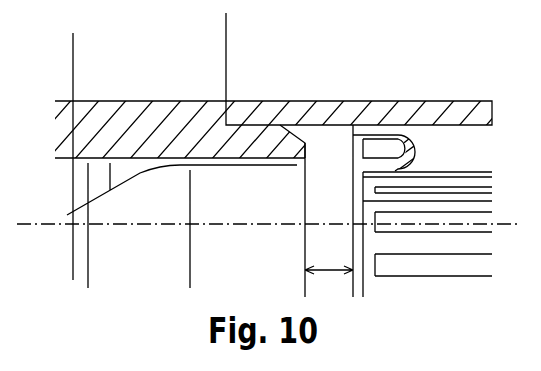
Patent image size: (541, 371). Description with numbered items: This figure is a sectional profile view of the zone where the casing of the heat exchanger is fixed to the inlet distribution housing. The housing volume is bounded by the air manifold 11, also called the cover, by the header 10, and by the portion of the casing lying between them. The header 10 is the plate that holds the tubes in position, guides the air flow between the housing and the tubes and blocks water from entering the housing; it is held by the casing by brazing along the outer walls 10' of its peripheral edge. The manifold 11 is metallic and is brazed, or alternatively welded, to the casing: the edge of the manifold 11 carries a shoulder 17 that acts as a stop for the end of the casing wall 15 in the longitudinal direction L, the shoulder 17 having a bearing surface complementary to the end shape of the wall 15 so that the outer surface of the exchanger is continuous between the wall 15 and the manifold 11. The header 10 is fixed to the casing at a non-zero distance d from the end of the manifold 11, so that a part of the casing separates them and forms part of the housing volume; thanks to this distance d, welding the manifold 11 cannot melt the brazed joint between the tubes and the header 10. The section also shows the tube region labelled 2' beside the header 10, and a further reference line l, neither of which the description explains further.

The manifold 11 is at (162, 108).
The wall of the casing 15 is at (290, 108).
The shoulder 17 is at (252, 125).
The outer walls of the peripheral edge of the header 10' is at (386, 106).
The header plate 10 is at (384, 177).
The stator 2' is at (427, 260).
The longitudinal direction L is at (40, 223).
The shaft line l is at (72, 256).
The distance d is at (329, 283).